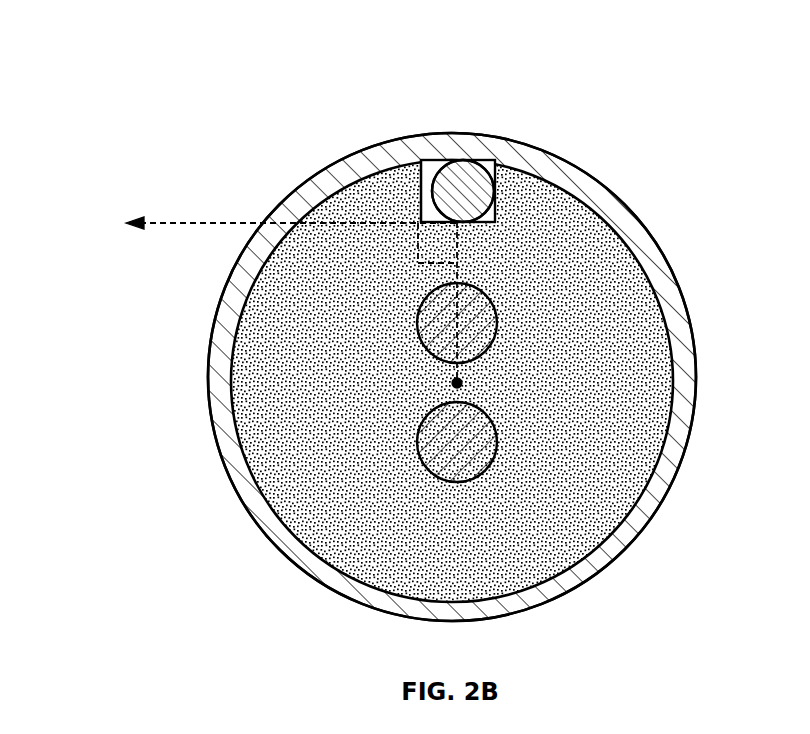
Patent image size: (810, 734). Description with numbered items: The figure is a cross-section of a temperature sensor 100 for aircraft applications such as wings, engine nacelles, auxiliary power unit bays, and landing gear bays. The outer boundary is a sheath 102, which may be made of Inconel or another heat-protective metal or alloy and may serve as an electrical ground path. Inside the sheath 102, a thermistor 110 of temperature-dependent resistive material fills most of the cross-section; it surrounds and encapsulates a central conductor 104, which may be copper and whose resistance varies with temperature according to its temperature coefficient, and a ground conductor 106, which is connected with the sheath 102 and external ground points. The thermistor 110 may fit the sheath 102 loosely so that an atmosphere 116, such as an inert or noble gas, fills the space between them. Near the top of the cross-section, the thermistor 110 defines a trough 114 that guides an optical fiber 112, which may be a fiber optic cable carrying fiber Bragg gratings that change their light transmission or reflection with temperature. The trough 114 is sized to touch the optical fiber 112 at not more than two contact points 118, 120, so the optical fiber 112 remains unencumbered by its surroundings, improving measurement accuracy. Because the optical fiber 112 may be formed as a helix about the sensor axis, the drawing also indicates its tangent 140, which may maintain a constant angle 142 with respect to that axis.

The temperature sensor 100 is at (682, 77).
The sheath 102 is at (648, 237).
The central conductor 104 is at (482, 327).
The ground conductor 106 is at (437, 455).
The thermistor 110 is at (537, 565).
The optical fiber 112 is at (467, 182).
The trough 114 is at (419, 192).
The atmosphere 116 is at (423, 159).
The contact point 118 is at (480, 191).
The contact point 120 is at (462, 224).
The tangent 140 is at (163, 230).
The constant angle 142 is at (418, 255).